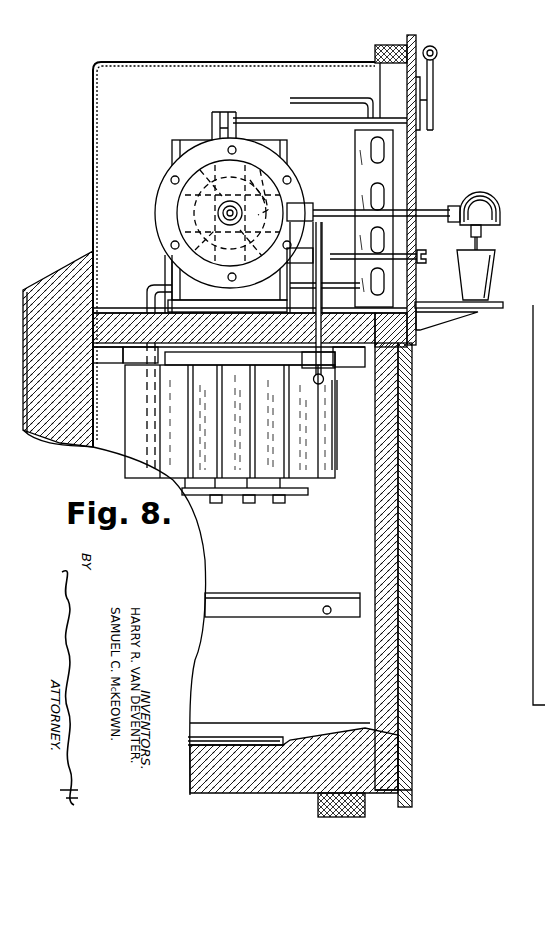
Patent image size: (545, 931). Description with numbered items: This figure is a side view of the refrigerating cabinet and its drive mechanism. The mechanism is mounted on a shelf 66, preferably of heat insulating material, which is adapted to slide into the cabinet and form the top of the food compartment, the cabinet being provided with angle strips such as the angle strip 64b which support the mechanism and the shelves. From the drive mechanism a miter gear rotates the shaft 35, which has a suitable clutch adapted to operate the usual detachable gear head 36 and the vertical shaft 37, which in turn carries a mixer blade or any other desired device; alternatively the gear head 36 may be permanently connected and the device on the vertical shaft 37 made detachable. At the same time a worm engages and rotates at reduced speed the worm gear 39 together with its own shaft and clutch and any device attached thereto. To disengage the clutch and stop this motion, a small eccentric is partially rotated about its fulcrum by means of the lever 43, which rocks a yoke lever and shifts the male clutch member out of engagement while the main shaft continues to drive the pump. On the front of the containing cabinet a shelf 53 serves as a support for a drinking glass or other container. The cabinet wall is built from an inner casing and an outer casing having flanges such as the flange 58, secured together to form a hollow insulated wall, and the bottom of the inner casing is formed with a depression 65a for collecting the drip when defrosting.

The shaft 35 is at (433, 208).
The detachable gear head 36 is at (485, 194).
The vertical shaft 37 is at (482, 243).
The worm gear 39 is at (424, 264).
The lever 43 is at (440, 67).
The shelf 53 is at (492, 312).
The flange 58 is at (533, 466).
The angle strip 64b is at (286, 606).
The depression 65a is at (233, 740).
The shelf 66 is at (347, 368).